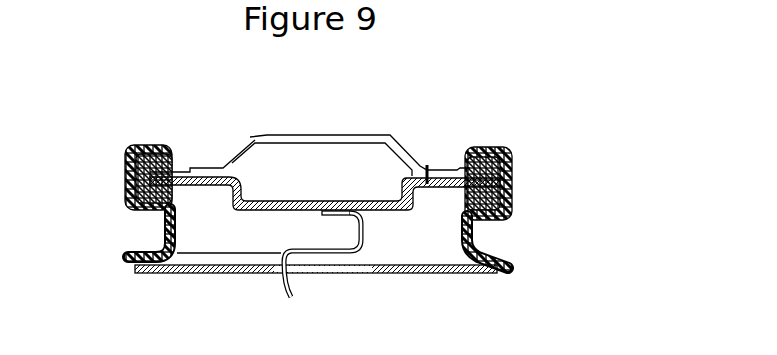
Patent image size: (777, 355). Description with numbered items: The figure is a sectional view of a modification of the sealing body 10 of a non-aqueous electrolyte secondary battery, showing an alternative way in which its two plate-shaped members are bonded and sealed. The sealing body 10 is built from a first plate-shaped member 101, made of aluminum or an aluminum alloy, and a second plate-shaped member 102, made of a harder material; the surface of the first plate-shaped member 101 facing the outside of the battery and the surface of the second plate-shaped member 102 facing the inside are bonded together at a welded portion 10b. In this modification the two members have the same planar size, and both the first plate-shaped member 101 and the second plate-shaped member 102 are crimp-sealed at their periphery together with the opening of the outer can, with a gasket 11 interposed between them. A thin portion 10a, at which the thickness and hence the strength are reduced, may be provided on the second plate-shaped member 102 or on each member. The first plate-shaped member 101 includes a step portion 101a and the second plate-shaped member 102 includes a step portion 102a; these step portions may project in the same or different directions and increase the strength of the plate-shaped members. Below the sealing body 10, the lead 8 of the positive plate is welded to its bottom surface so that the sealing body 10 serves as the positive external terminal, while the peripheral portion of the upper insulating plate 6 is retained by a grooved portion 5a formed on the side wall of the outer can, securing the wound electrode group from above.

The gasket 11 is at (133, 146).
The sealing body 10 is at (440, 81).
The first plate-shaped member 101 is at (318, 200).
The step portion of the first plate-shaped member 101a is at (270, 142).
The second plate-shaped member 102 is at (310, 125).
The step portion of the second plate-shaped member 102a is at (253, 134).
The thin portion 10a is at (452, 180).
The welded portion 10b is at (496, 194).
The lead 8 is at (123, 253).
The grooved portion 5a is at (478, 231).
The upper insulating plate 6 is at (165, 274).